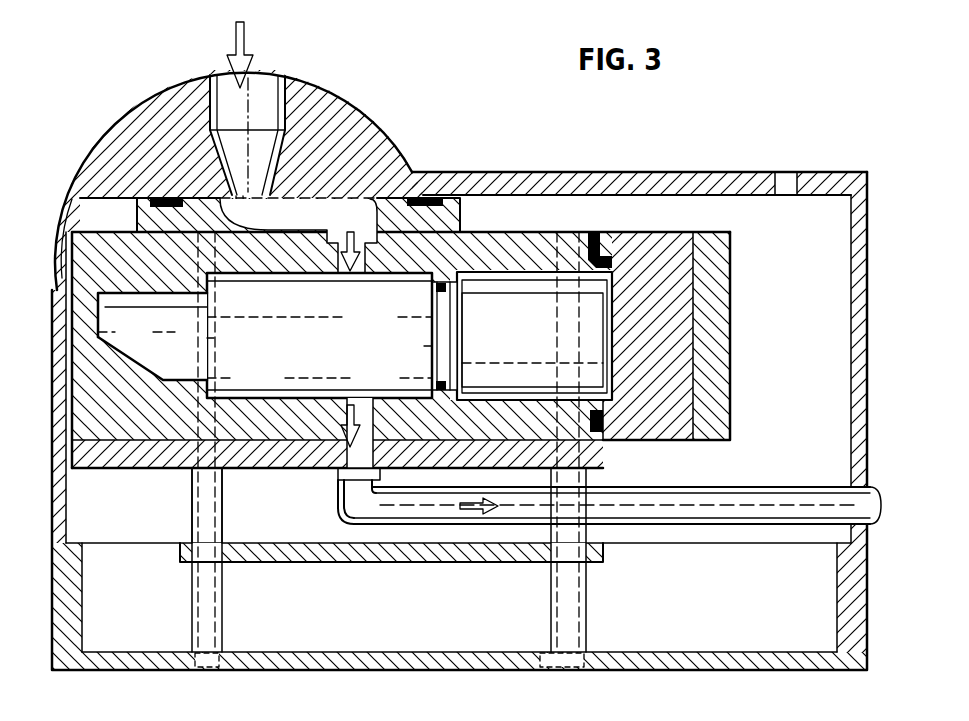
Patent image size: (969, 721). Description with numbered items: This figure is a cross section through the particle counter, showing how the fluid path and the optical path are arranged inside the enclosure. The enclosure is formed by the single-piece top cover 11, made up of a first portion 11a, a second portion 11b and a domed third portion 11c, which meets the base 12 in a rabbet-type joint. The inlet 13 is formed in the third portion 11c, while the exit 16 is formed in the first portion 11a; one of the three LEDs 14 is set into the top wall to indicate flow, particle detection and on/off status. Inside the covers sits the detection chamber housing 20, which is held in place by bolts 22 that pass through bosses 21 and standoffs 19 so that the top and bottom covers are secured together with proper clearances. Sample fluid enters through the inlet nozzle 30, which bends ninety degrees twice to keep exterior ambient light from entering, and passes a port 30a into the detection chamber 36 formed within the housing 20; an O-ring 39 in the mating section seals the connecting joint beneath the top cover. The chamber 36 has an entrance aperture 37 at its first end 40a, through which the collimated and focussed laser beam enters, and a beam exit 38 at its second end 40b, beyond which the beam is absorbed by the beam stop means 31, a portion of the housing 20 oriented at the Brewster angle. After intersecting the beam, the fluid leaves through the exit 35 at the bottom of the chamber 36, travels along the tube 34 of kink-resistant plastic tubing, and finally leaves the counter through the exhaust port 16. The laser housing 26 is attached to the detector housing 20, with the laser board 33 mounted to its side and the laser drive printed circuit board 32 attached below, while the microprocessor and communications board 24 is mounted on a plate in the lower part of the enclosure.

The top cover 11 is at (463, 393).
The first portion 11a is at (639, 162).
The second portion 11b is at (49, 272).
The third portion 11c is at (110, 130).
The base 12 is at (91, 677).
The inlet 13 is at (258, 78).
The LED 14 is at (784, 173).
The exit 16 is at (855, 486).
The standoff 19 is at (216, 520).
The detection chamber housing 20 is at (424, 332).
The boss 21 is at (203, 613).
The bolt 22 is at (207, 672).
The microprocessor and communications board 24 is at (473, 558).
The laser housing 26 is at (641, 258).
The inlet nozzle 30 is at (312, 237).
The inlet port 30a is at (372, 280).
The beam stop means 31 is at (203, 347).
The first printed circuit board 32 is at (178, 462).
The second printed circuit board 33 is at (722, 358).
The tube 34 is at (742, 512).
The exit 35 is at (332, 472).
The detection chamber 36 is at (325, 358).
The entrance aperture 37 is at (458, 268).
The exit 38 is at (149, 345).
The O-ring 39 is at (155, 197).
The first end 40a is at (424, 346).
The second end 40b is at (215, 338).